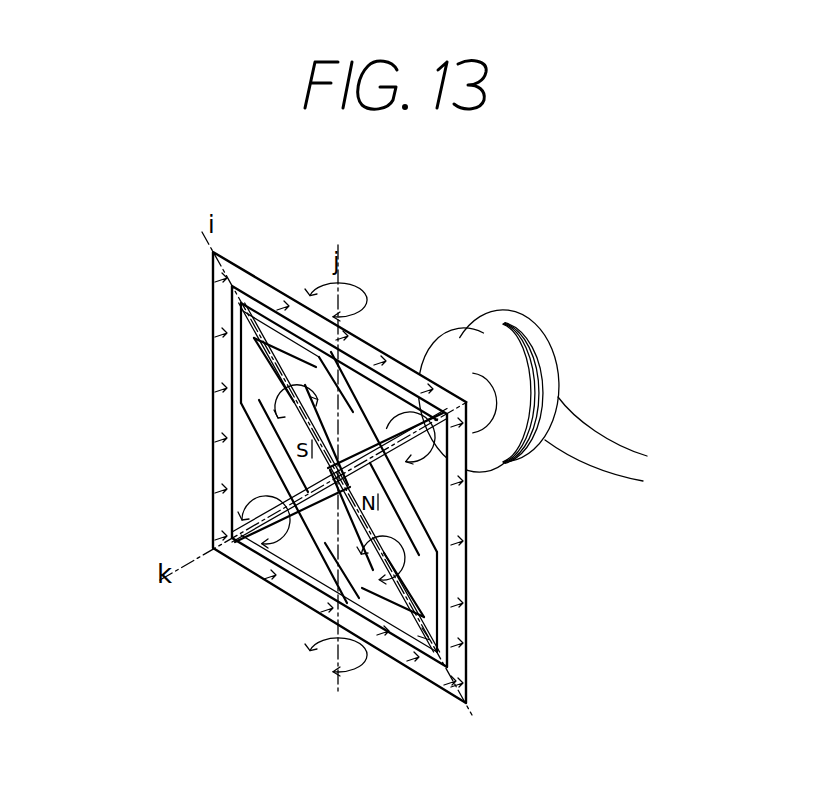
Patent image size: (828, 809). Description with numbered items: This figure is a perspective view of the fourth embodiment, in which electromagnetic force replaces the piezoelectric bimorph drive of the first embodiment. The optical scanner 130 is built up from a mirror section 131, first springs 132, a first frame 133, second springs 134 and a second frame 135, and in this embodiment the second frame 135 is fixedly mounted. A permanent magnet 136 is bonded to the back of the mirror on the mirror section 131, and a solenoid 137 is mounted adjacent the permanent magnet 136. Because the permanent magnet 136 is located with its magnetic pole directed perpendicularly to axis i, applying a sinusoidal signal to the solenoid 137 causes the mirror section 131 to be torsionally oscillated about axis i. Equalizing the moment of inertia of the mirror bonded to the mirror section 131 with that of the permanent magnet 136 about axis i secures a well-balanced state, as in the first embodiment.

The optical scanner 130 is at (413, 687).
The mirror section 131 is at (400, 500).
The first springs 132 is at (402, 585).
The first frame 133 is at (441, 633).
The second springs 134 is at (248, 544).
The second frame 135 is at (213, 322).
The permanent magnet 136 is at (262, 453).
The solenoid 137 is at (437, 338).